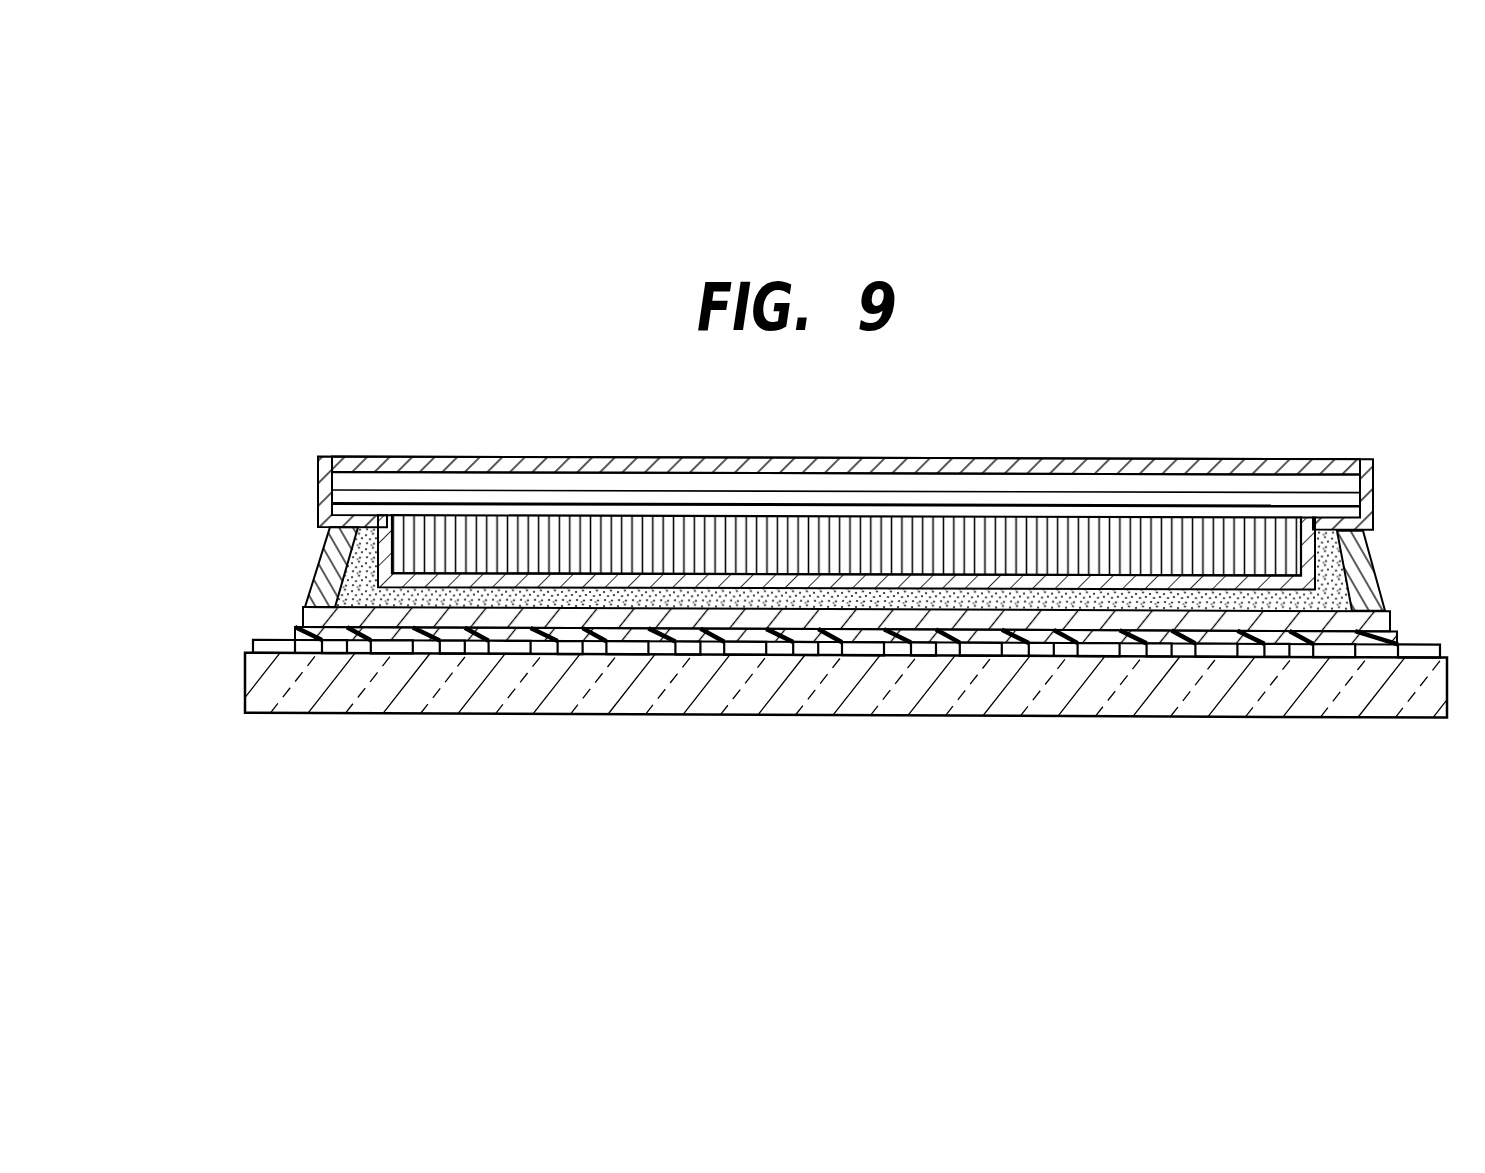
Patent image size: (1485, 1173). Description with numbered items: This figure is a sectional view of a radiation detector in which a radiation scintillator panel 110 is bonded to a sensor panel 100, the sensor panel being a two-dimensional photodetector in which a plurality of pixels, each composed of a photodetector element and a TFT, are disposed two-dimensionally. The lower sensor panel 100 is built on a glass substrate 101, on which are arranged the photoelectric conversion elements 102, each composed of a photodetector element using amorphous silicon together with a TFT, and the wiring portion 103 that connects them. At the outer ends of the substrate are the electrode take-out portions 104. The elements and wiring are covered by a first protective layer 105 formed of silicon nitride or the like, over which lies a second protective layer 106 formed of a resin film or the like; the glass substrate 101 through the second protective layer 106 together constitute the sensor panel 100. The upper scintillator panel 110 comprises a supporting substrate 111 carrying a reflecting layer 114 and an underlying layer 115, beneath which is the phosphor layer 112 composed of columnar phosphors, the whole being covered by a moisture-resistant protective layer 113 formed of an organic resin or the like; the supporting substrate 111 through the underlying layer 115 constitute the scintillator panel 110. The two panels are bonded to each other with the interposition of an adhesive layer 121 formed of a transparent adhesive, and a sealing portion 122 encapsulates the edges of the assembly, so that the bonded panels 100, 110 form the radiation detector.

The sensor panel 100 is at (185, 605).
The glass substrate 101 is at (520, 700).
The photoelectric conversion element 102 is at (633, 650).
The wiring portion 103 is at (692, 653).
The electrode take-out portion 104 is at (280, 639).
The first protective layer 105 is at (1070, 645).
The second protective layer 106 is at (1252, 622).
The radiation scintillator panel 110 is at (185, 450).
The supporting substrate 111 is at (525, 477).
The phosphor layer 112 is at (915, 530).
The moisture-resistant protective layer 113 is at (1115, 460).
The reflecting layer 114 is at (607, 498).
The underlying layer 115 is at (725, 513).
The adhesive layer 121 is at (427, 603).
The sealing portion 122 is at (322, 542).